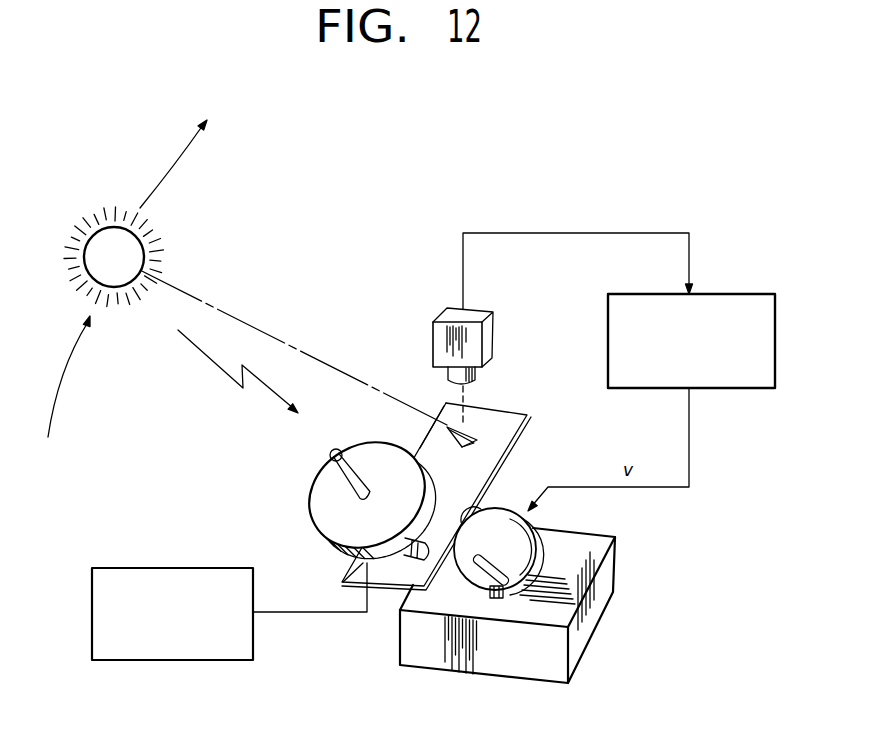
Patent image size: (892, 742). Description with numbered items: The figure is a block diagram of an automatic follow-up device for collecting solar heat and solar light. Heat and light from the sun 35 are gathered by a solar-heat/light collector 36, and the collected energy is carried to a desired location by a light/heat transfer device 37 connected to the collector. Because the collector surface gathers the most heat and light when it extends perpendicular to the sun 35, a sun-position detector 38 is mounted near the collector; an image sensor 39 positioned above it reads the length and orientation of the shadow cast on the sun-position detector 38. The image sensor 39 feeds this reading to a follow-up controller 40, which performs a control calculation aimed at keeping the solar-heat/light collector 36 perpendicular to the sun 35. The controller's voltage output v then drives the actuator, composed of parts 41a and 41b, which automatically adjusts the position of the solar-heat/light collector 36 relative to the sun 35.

The sun 35 is at (132, 246).
The solar-heat/light collector 36 is at (332, 498).
The light/heat transfer device 37 is at (193, 661).
The sun-position detector 38 is at (447, 438).
The image sensor 39 is at (433, 334).
The follow-up controller 40 is at (731, 293).
The actuator 41a is at (512, 597).
The actuator 41b is at (506, 507).